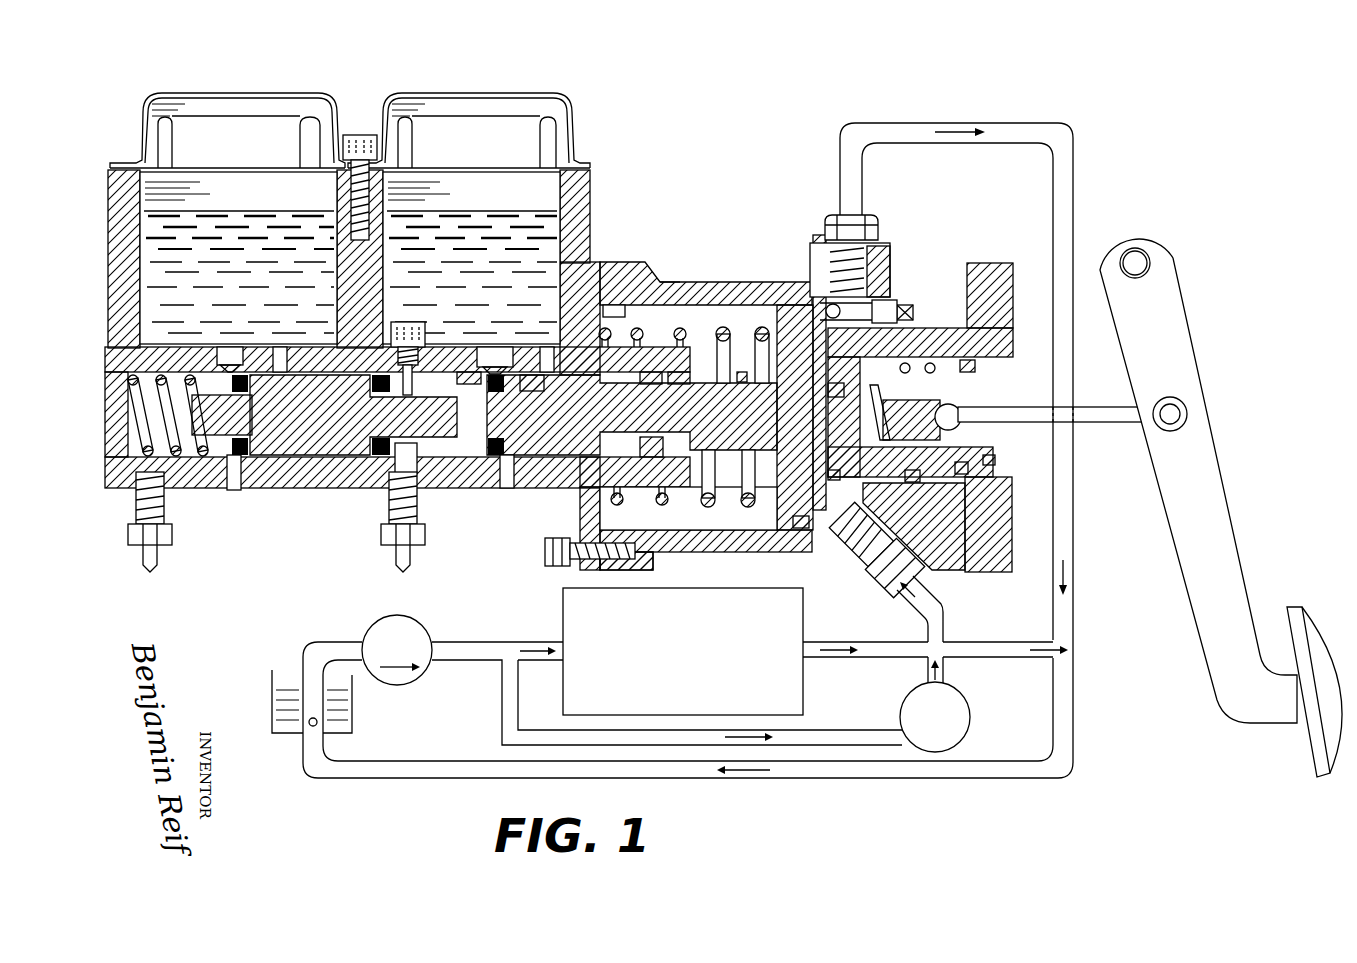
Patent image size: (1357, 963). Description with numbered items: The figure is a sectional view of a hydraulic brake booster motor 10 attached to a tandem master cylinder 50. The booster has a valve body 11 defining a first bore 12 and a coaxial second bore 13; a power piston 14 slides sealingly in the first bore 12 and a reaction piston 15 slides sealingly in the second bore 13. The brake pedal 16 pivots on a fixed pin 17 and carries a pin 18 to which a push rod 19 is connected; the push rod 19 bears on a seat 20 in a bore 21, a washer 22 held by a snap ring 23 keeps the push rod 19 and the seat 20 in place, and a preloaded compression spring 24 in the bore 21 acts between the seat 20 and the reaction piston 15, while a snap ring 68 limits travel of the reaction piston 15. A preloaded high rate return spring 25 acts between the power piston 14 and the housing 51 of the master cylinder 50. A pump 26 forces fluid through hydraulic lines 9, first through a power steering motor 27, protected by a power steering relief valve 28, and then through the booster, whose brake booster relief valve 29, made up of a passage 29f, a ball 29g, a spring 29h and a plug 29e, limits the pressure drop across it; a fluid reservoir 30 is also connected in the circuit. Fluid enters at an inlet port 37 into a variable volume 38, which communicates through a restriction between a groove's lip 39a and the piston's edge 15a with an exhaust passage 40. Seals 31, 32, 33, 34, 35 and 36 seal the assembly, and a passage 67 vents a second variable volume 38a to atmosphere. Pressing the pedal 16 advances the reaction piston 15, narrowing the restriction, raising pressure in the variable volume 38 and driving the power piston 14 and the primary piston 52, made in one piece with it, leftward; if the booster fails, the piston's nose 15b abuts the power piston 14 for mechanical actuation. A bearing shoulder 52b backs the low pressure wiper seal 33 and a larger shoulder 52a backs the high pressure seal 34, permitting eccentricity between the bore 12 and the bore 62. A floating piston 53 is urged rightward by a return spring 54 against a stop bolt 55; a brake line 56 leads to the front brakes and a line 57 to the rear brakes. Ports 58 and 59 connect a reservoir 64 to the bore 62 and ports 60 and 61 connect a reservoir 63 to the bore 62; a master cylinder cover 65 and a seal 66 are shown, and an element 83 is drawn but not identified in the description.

The hydraulic line 9 is at (1053, 247).
The brake booster motor 10 is at (672, 278).
The valve body 11 is at (718, 285).
The first bore 12 is at (606, 300).
The second bore 13 is at (912, 472).
The power piston 14 is at (792, 522).
The reaction piston 15 is at (995, 462).
The piston's edge 15a is at (827, 459).
The piston's nose 15b is at (742, 360).
The brake pedal 16 is at (1225, 482).
The fixed pin 17 is at (1160, 266).
The pin 18 is at (1195, 418).
The push rod 19 is at (1105, 424).
The seat 20 is at (952, 445).
The bore 21 is at (930, 340).
The washer 22 is at (963, 408).
The snap ring 23 is at (978, 372).
The preloaded compression spring 24 is at (946, 505).
The preloaded high rate compression return spring 25 is at (713, 348).
The pump 26 is at (426, 642).
The power steering motor 27 is at (563, 614).
The power steering relief valve 28 is at (972, 736).
The brake booster relief valve 29 is at (895, 250).
The plug 29e is at (912, 300).
The passage 29f is at (830, 250).
The ball 29g is at (845, 214).
The spring 29h is at (840, 305).
The fluid reservoir 30 is at (355, 712).
The seal 31 is at (1010, 333).
The seal 32 is at (790, 302).
The seal 33 is at (655, 372).
The seal 34 is at (500, 462).
The seal 35 is at (410, 452).
The seal 36 is at (233, 470).
The inlet port 37 is at (840, 548).
The variable volume 38 is at (816, 255).
The second variable volume 38a is at (688, 509).
The groove's lip 39a is at (832, 376).
The passage 40 is at (886, 299).
The master cylinder 50 is at (360, 106).
The housing 51 is at (590, 217).
The primary piston 52 is at (532, 457).
The shoulder 52a is at (532, 380).
The bearing shoulder 52b is at (680, 382).
The floating piston 53 is at (325, 457).
The return spring 54 is at (110, 430).
The stop bolt 55 is at (393, 328).
The hydraulic brake line 56 is at (158, 566).
The line 57 is at (395, 563).
The port 58 is at (218, 343).
The port 59 is at (282, 343).
The port 60 is at (487, 345).
The port 61 is at (545, 347).
The bore 62 is at (462, 378).
The reservoir 63 is at (560, 200).
The reservoir 64 is at (340, 203).
The master cylinder cover 65 is at (503, 96).
The seal 66 is at (483, 166).
The passage 67 is at (560, 536).
The snap ring 68 is at (992, 474).
The bolt 83 is at (545, 560).